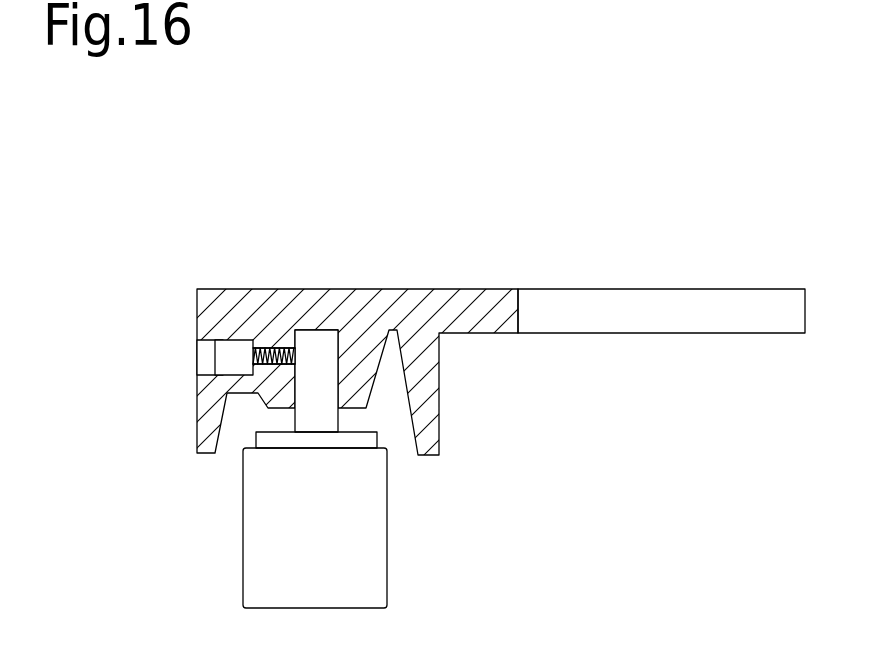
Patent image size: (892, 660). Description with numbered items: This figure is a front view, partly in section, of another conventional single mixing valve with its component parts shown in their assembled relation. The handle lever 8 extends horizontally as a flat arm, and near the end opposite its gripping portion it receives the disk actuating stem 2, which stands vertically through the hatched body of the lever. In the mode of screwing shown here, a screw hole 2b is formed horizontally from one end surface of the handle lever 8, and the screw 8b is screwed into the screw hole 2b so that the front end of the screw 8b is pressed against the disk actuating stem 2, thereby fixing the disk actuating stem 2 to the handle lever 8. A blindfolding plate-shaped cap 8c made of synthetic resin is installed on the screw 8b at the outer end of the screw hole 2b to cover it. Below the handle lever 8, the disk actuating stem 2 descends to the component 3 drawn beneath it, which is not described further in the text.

The disk actuating stem 2 is at (318, 337).
The screw hole 2b is at (262, 345).
The motor 3 is at (367, 563).
The handle lever 8 is at (690, 308).
The screw 8b is at (276, 343).
The blindfolding plate-shaped cap 8c is at (198, 370).